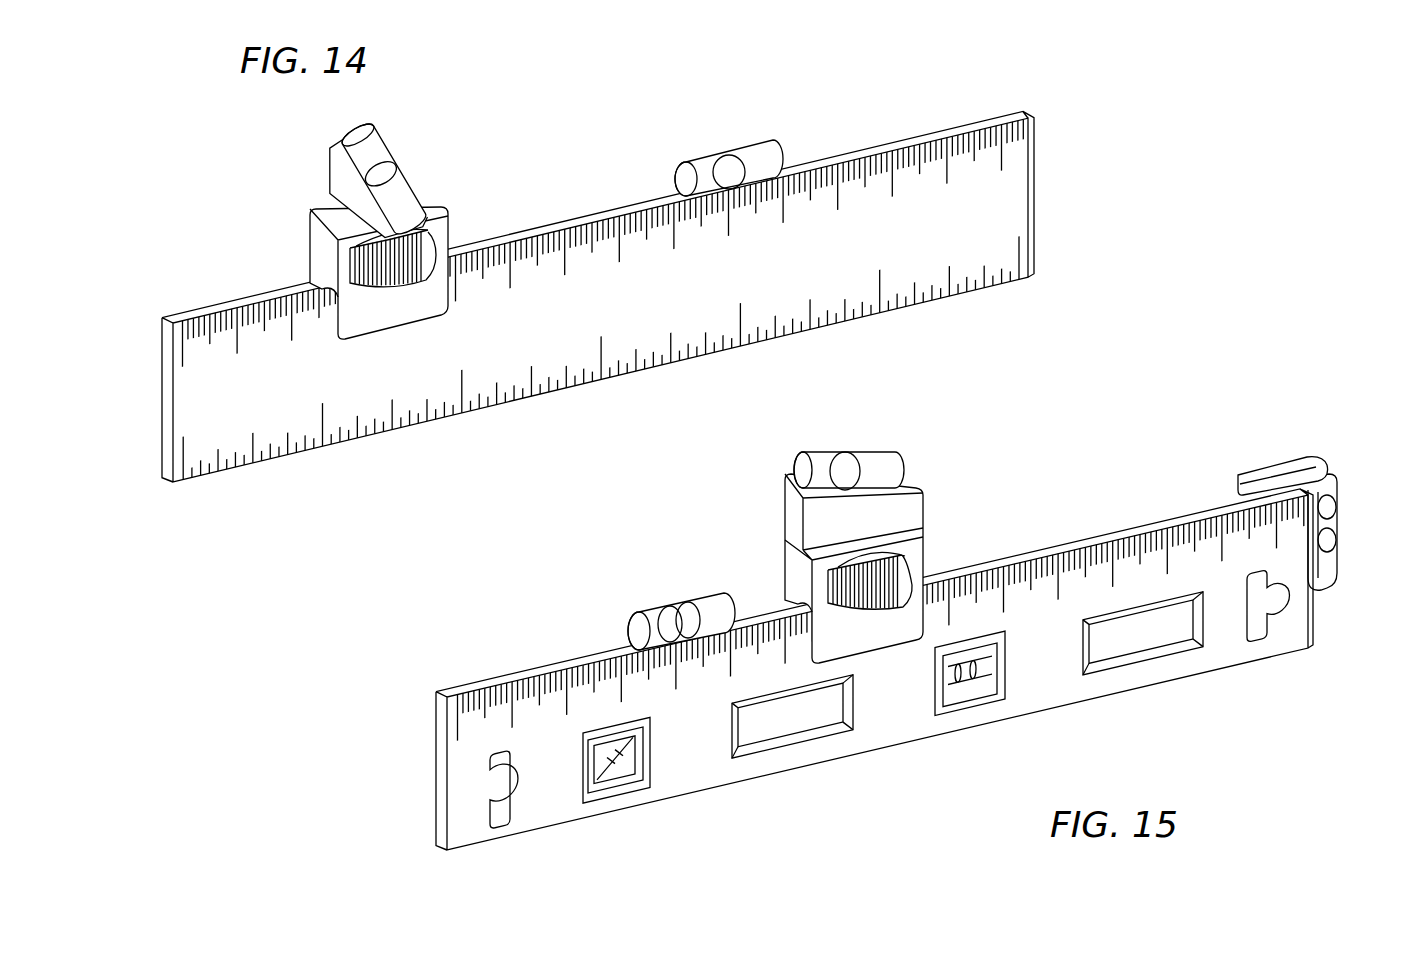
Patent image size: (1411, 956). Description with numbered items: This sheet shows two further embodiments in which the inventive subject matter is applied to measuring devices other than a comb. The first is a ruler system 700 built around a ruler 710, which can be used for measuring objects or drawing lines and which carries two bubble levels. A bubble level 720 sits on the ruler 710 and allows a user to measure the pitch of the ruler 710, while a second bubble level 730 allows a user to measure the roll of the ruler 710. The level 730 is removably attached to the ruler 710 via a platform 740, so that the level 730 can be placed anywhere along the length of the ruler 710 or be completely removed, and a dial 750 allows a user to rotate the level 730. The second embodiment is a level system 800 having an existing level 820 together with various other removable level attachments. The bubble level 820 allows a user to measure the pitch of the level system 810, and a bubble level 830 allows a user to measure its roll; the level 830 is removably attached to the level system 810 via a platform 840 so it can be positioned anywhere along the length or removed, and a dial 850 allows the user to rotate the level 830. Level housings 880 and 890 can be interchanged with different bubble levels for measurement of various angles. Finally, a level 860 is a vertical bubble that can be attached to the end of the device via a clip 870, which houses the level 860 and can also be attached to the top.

In FIG. 14, the ruler system 700 is at (246, 176).
In FIG. 14, the ruler 710 is at (1028, 110).
In FIG. 14, the bubble level 720 is at (728, 157).
In FIG. 14, the bubble level 730 is at (391, 134).
In FIG. 14, the platform 740 is at (436, 208).
In FIG. 14, the dial 750 is at (372, 268).
In FIG. 15, the level system 800 is at (498, 626).
In FIG. 15, the level system 810 is at (1222, 675).
In FIG. 15, the bubble level 820 is at (650, 612).
In FIG. 15, the bubble level 830 is at (880, 458).
In FIG. 15, the platform 840 is at (797, 567).
In FIG. 15, the dial 850 is at (908, 568).
In FIG. 15, the level 860 is at (1333, 497).
In FIG. 15, the clip 870 is at (1258, 472).
In FIG. 15, the level housing 880 is at (968, 678).
In FIG. 15, the level housing 890 is at (600, 773).